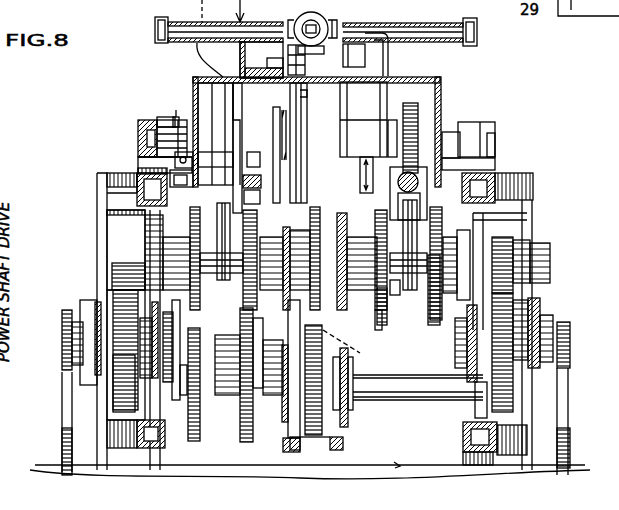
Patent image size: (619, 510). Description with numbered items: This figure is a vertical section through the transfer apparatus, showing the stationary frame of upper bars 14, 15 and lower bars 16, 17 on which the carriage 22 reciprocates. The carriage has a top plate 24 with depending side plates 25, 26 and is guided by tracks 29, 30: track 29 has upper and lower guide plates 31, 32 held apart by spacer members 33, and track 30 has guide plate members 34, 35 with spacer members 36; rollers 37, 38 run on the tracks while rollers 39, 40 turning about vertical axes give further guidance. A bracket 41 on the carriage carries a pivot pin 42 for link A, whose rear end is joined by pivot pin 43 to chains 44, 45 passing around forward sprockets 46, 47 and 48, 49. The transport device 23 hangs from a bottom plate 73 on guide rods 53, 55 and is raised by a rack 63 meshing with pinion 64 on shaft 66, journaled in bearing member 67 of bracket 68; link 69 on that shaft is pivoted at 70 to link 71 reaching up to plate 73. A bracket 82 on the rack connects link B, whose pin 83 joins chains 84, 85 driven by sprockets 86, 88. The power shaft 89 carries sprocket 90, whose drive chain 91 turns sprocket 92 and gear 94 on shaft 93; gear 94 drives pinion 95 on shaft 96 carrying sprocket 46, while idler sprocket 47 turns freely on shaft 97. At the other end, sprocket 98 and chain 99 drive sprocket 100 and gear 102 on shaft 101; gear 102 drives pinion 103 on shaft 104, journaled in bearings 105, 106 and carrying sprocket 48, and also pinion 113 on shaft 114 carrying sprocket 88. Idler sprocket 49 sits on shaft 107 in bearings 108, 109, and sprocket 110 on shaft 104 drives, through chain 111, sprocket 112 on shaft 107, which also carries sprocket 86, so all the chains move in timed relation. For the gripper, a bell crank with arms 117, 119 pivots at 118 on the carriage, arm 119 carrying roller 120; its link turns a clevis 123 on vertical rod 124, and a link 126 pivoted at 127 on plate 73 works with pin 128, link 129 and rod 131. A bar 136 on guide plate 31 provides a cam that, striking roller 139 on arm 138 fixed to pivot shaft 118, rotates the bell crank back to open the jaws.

The upper bar 14 is at (140, 190).
The upper bar 15 is at (530, 181).
The lower bar 16 is at (140, 440).
The lower bar 17 is at (463, 436).
The carriage 22 is at (467, 95).
The transport device 23 is at (375, 17).
The top plate 24 is at (405, 78).
The side plate member 25 is at (195, 95).
The side plate member 26 is at (458, 120).
The track 29 is at (128, 133).
The track 30 is at (506, 130).
The upper guide plate 31 is at (165, 128).
The lower guide plate 32 is at (140, 163).
The spacer member 33 is at (140, 150).
The upper guide plate member 34 is at (495, 124).
The lower guide plate member 35 is at (497, 165).
The spacer member 36 is at (496, 148).
The roller 37 is at (142, 128).
The roller 38 is at (515, 140).
The roller 39 is at (140, 172).
The roller 40 is at (510, 175).
The bracket 41 is at (212, 86).
The pivot pin 42 is at (192, 210).
The pivot pin 43 is at (202, 350).
The chain 44 is at (183, 395).
The chain 45 is at (280, 440).
The sprocket 46 is at (200, 395).
The sprocket 47 is at (220, 280).
The sprocket 48 is at (243, 415).
The sprocket 49 is at (277, 300).
The guide rod 53 is at (262, 148).
The guide rod 55 is at (362, 160).
The rack 63 is at (422, 173).
The pinion 64 is at (438, 90).
The shaft 66 is at (411, 110).
The bearing member 67 is at (392, 160).
The bracket 68 is at (380, 106).
The link 69 is at (353, 175).
The pivot 70 is at (295, 143).
The link 71 is at (291, 135).
The bottom plate 73 is at (382, 61).
The bracket 82 is at (391, 200).
The pin 83 is at (414, 280).
The chain 84 is at (380, 330).
The chain 85 is at (434, 325).
The sprocket 86 is at (398, 300).
The sprocket 88 is at (388, 312).
The power shaft 89 is at (418, 468).
The sprocket 90 is at (62, 446).
The drive chain 91 is at (62, 385).
The sprocket 92 is at (70, 347).
The shaft 93 is at (66, 325).
The gear 94 is at (118, 305).
The pinion 95 is at (118, 408).
The shaft 96 is at (175, 325).
The shaft 97 is at (125, 250).
The sprocket 98 is at (570, 444).
The chain 99 is at (570, 390).
The sprocket 100 is at (570, 350).
The shaft 101 is at (555, 335).
The gear 102 is at (507, 322).
The pinion 103 is at (490, 413).
The shaft 104 is at (427, 392).
The bearing 105 is at (330, 428).
The bearing 106 is at (282, 355).
The shaft 107 is at (315, 260).
The bearing 108 is at (285, 300).
The bearing 109 is at (342, 300).
The sprocket 110 is at (340, 383).
The chain 111 is at (361, 381).
The sprocket 112 is at (265, 362).
The pinion 113 is at (520, 258).
The shaft 114 is at (450, 240).
The arm 117 is at (204, 56).
The pivot shaft 118 is at (204, 160).
The arm 119 is at (262, 180).
The roller 120 is at (255, 203).
The clevis arrangement 123 is at (233, 78).
The rod 124 is at (281, 120).
The link 126 is at (272, 60).
The pivot 127 is at (346, 56).
The pin 128 is at (310, 100).
The link 129 is at (304, 16).
The rod 131 is at (330, 20).
The elongated bar 136 is at (165, 118).
The arm 138 is at (140, 132).
The roller 139 is at (182, 110).